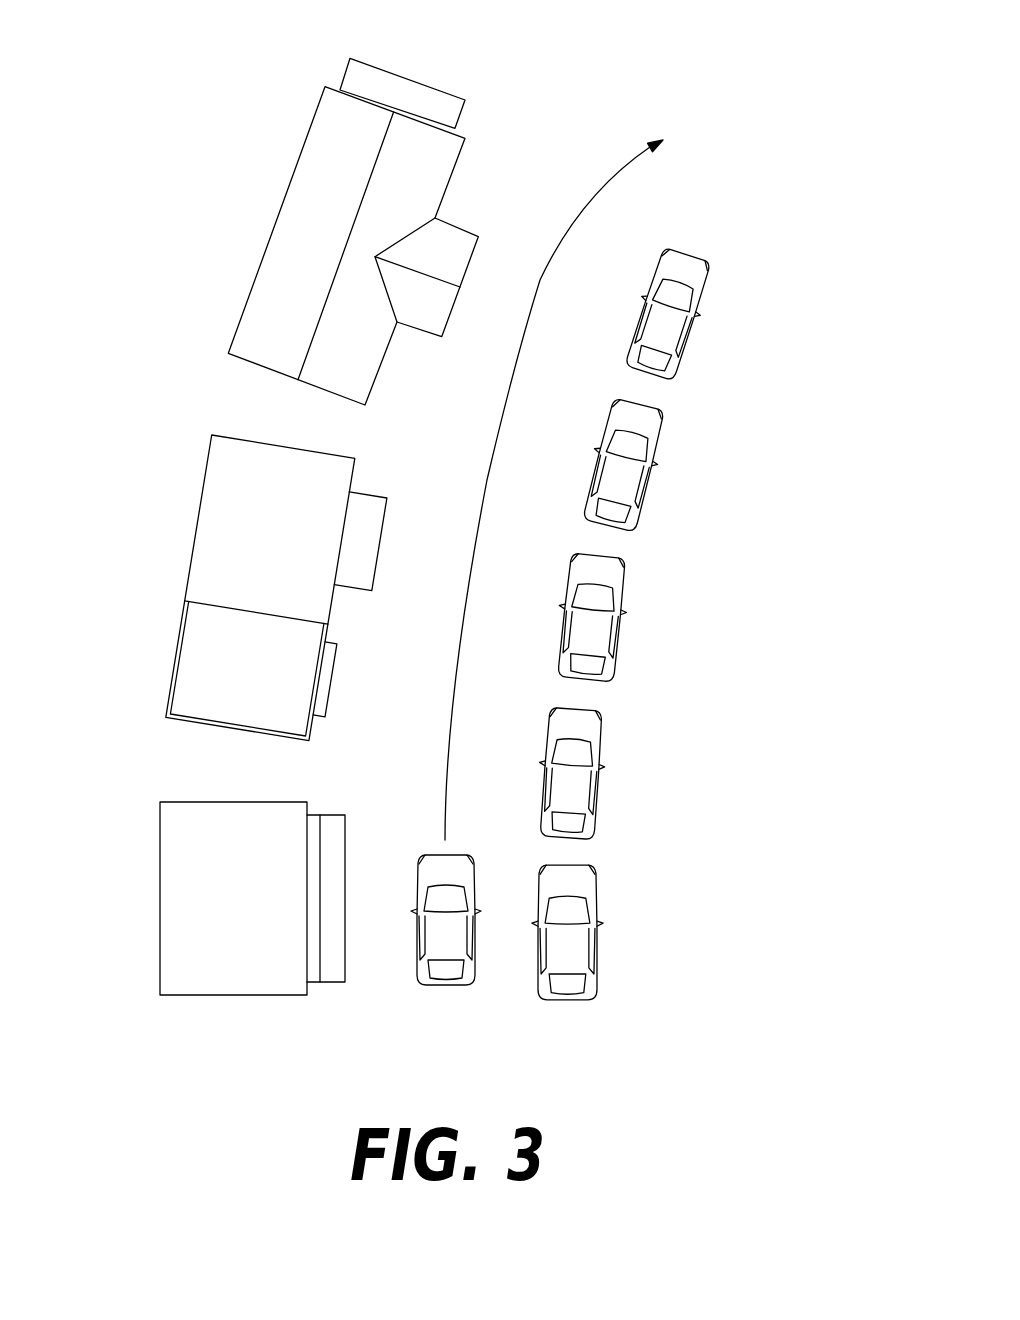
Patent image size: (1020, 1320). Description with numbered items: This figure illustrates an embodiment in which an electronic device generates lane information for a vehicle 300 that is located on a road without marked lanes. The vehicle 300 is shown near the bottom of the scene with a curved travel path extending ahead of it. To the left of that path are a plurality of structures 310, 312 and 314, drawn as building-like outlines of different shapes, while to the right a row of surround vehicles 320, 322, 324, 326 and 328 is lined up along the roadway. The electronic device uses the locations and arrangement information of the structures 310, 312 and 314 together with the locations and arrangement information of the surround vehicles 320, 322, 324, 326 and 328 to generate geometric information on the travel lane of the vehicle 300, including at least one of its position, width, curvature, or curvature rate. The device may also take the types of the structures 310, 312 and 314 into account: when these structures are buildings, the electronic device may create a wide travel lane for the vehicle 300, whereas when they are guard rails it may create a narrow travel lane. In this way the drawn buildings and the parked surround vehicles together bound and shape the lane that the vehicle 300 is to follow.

The vehicle 300 is at (443, 985).
The structure 310 is at (273, 242).
The structure 312 is at (198, 555).
The structure 314 is at (167, 859).
The surround vehicle 320 is at (710, 278).
The surround vehicle 322 is at (658, 432).
The surround vehicle 324 is at (627, 590).
The surround vehicle 326 is at (602, 737).
The surround vehicle 328 is at (595, 895).